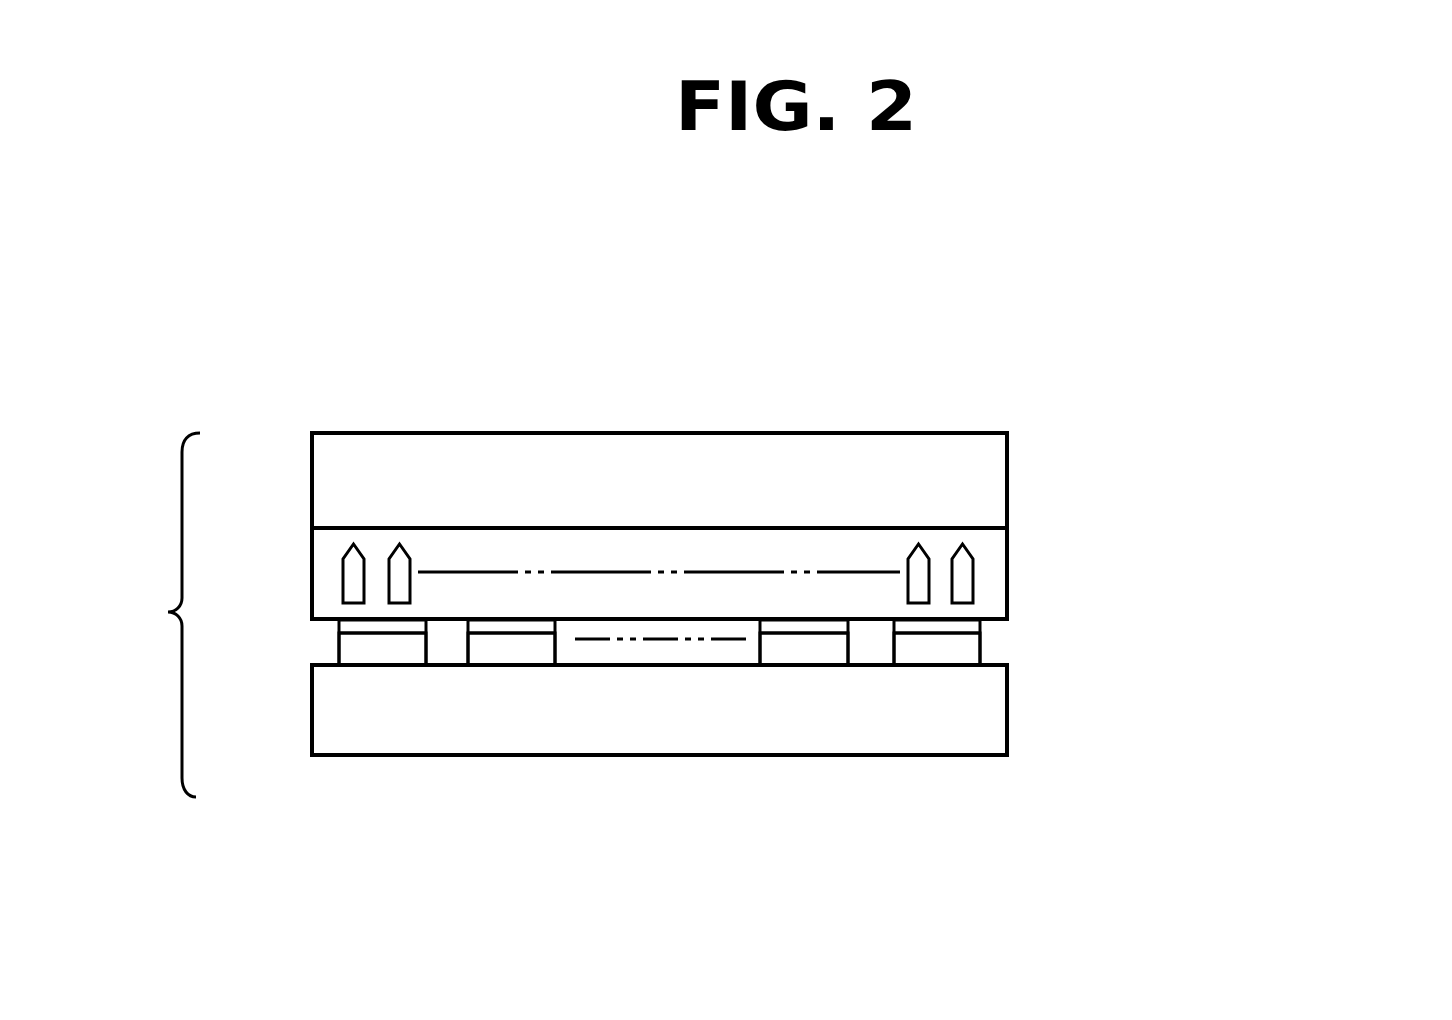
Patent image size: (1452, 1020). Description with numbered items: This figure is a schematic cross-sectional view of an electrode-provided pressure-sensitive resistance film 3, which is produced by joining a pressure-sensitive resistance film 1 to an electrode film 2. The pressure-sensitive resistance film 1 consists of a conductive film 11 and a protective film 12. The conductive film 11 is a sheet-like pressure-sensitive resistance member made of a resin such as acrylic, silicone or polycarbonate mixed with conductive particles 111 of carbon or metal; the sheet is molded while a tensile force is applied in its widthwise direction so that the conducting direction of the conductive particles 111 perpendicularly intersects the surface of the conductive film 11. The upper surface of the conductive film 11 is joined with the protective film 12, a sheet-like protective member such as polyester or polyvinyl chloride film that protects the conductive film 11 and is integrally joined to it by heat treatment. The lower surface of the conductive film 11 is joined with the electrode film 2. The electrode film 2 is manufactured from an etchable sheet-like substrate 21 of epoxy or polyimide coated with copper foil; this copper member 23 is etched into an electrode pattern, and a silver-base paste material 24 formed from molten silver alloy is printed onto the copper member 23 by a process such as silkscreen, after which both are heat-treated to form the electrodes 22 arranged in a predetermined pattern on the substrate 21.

The pressure-sensitive resistance film 1 is at (830, 448).
The conductive film 11 is at (990, 571).
The conductive particles 111 is at (343, 571).
The protective film 12 is at (978, 472).
The electrode film 2 is at (789, 747).
The substrate 21 is at (999, 734).
The electrodes 22 is at (789, 736).
The copper member 23 is at (353, 650).
The paste material 24 is at (338, 630).
The electrode-provided pressure-sensitive resistance film 3 is at (170, 615).